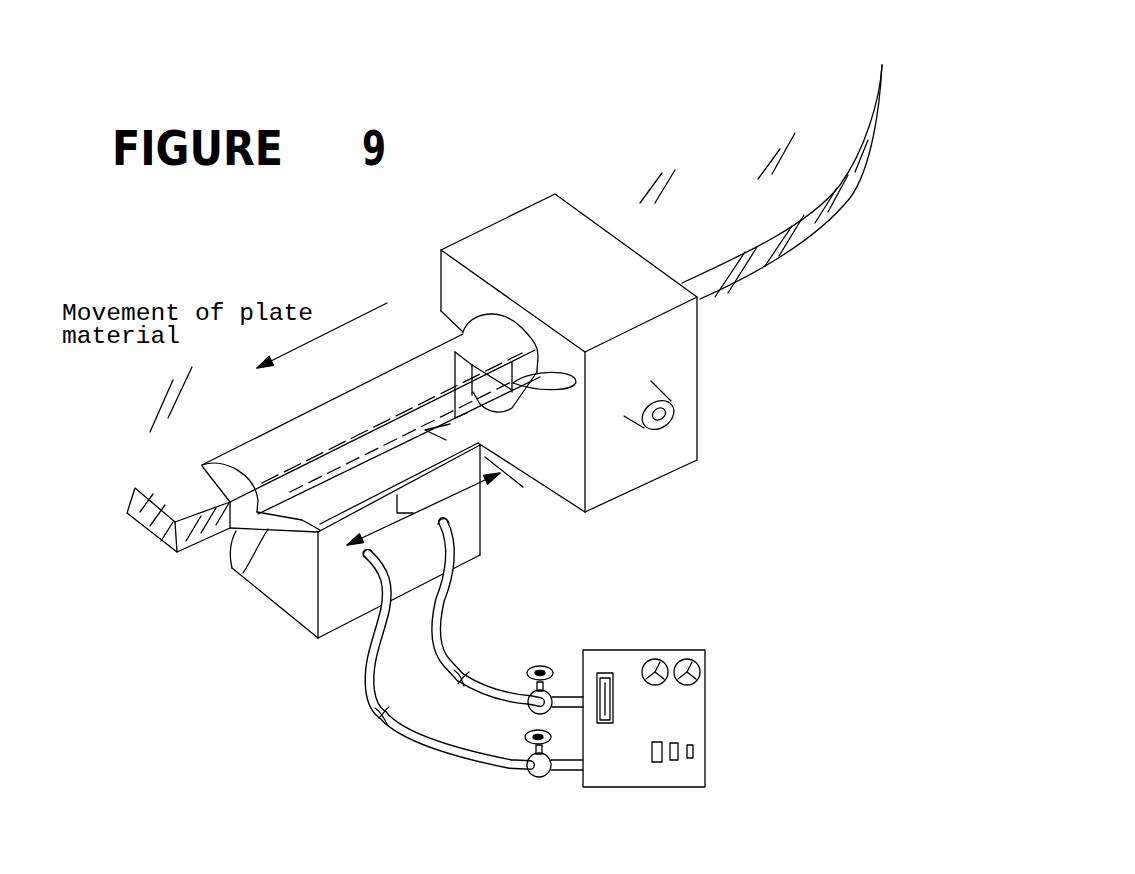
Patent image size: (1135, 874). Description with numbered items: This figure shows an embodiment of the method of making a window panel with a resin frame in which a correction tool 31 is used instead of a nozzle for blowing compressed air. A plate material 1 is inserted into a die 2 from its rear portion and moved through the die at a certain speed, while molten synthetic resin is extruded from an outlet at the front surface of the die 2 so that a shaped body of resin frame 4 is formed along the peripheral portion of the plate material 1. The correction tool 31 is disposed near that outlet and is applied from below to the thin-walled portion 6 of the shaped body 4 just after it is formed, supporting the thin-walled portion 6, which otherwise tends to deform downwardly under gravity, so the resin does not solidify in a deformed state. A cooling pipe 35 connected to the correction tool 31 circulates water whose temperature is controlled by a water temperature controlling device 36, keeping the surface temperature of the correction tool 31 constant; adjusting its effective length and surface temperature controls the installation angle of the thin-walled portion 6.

The plate material 1 is at (730, 232).
The die 2 is at (503, 258).
The shaped body of resin frame 4 is at (402, 398).
The thin-walled portion 6 is at (243, 573).
The correction tool 31 is at (287, 588).
The cooling pipe 35 is at (450, 587).
The water temperature controlling device 36 is at (623, 660).